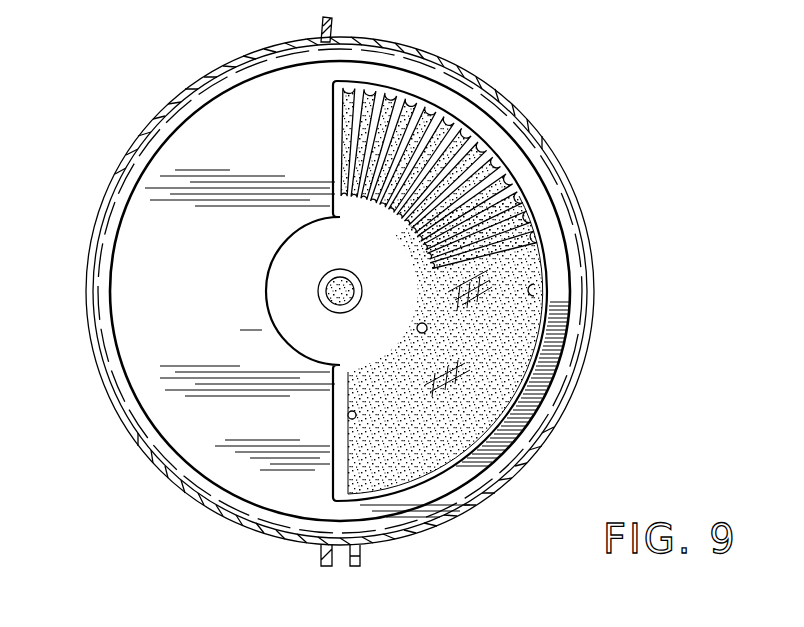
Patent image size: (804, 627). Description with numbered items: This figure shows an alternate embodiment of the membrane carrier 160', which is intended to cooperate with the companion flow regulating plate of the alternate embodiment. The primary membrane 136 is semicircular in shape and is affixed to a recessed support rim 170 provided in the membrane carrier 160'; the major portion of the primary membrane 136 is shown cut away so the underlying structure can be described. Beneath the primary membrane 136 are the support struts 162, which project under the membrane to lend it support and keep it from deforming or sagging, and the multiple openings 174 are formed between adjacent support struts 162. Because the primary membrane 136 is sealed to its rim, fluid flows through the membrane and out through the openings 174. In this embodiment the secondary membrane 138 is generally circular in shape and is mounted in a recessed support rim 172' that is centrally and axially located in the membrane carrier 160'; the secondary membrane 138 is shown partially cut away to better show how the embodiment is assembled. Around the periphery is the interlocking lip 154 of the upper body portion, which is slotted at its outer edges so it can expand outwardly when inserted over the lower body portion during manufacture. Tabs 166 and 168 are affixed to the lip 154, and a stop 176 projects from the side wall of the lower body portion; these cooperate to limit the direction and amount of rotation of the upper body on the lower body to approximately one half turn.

The primary membrane 136 is at (492, 387).
The secondary membrane 138 is at (332, 283).
The interlocking lip 154 is at (257, 58).
The membrane carrier 160' is at (421, 251).
The support struts 162 is at (402, 146).
The tab 166 is at (372, 10).
The tab 168 is at (321, 563).
The recessed support rim 170 is at (417, 328).
The recessed support rim 172' is at (302, 302).
The openings 174 is at (383, 157).
The stop 176 is at (361, 566).